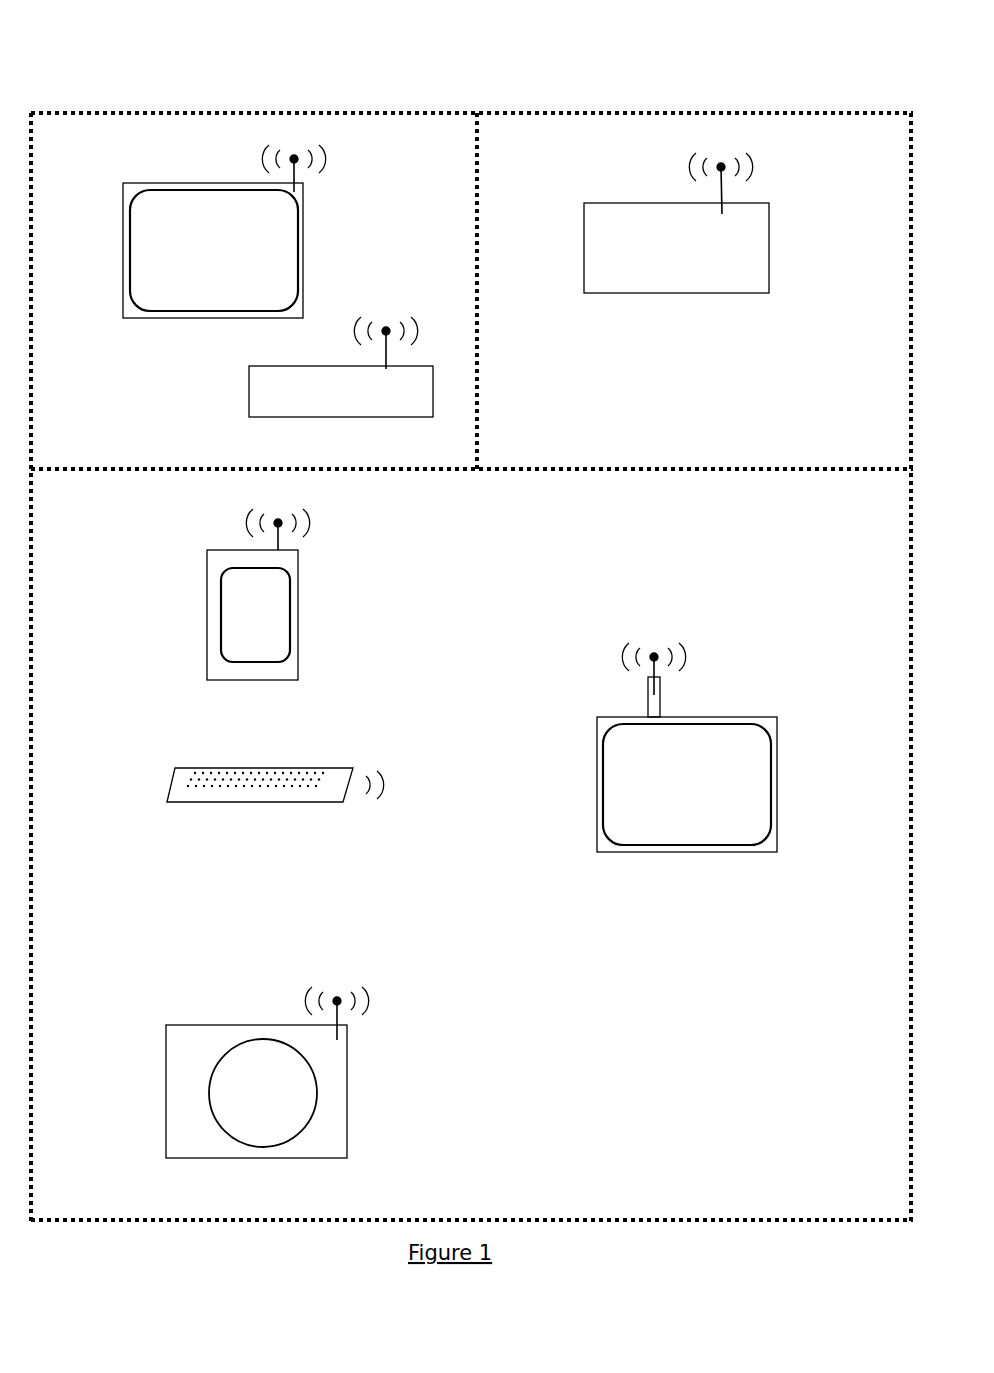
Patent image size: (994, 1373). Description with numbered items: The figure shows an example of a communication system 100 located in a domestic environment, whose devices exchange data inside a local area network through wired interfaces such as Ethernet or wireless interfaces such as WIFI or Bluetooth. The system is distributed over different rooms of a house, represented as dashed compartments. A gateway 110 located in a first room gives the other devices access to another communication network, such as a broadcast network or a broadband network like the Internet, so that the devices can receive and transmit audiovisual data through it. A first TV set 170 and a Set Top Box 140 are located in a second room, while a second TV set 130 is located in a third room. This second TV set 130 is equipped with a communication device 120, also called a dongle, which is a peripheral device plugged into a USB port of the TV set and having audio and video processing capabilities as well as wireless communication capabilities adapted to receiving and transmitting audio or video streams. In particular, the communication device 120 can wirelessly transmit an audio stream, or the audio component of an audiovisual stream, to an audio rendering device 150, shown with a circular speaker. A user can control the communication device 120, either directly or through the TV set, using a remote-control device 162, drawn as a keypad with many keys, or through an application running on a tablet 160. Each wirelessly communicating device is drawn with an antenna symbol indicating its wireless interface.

The communication system 100 is at (782, 60).
The gateway 110 is at (733, 282).
The communication device 120 is at (655, 705).
The second TV set 130 is at (623, 767).
The Set Top Box 140 is at (291, 408).
The audio rendering device 150 is at (194, 1075).
The tablet 160 is at (222, 553).
The remote-control device 162 is at (198, 786).
The first TV set 170 is at (150, 233).